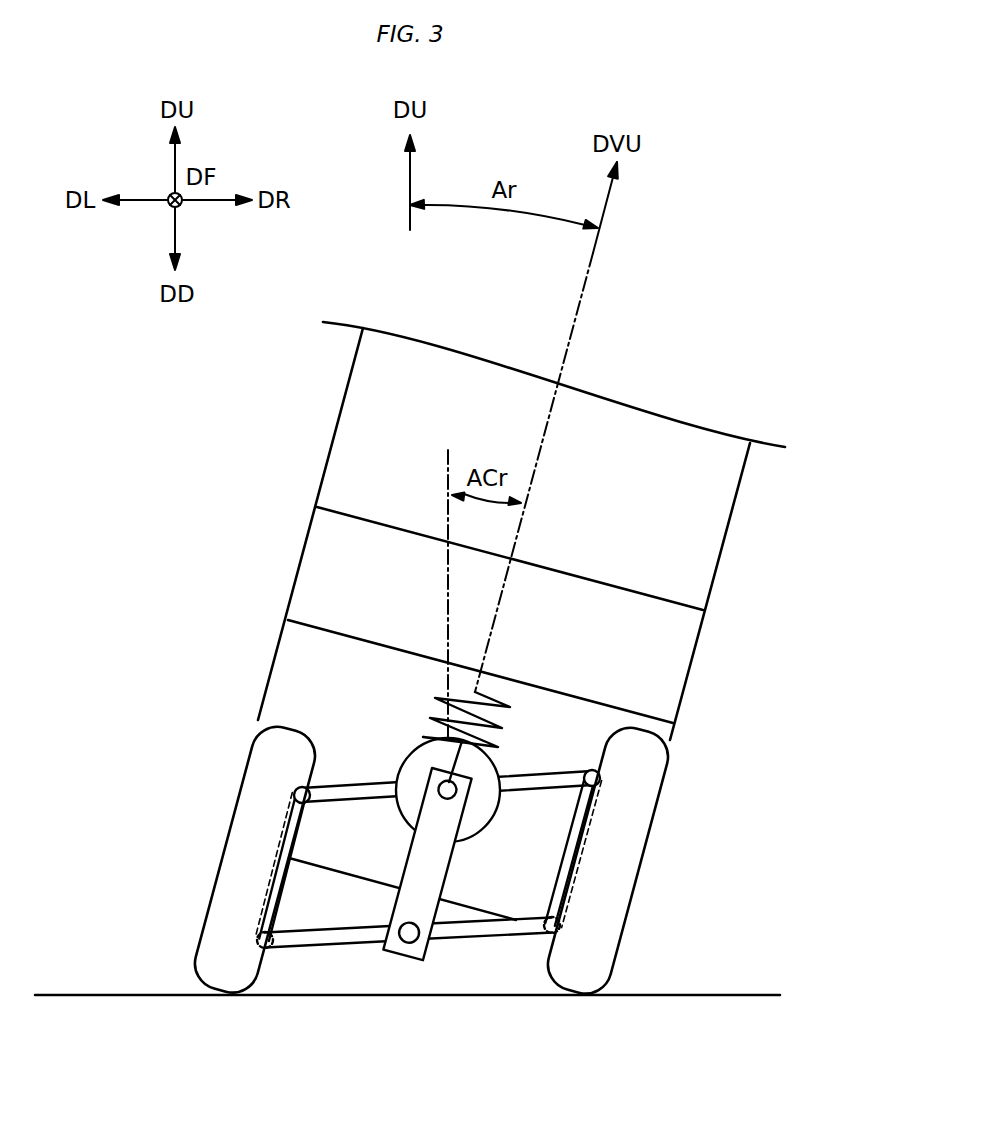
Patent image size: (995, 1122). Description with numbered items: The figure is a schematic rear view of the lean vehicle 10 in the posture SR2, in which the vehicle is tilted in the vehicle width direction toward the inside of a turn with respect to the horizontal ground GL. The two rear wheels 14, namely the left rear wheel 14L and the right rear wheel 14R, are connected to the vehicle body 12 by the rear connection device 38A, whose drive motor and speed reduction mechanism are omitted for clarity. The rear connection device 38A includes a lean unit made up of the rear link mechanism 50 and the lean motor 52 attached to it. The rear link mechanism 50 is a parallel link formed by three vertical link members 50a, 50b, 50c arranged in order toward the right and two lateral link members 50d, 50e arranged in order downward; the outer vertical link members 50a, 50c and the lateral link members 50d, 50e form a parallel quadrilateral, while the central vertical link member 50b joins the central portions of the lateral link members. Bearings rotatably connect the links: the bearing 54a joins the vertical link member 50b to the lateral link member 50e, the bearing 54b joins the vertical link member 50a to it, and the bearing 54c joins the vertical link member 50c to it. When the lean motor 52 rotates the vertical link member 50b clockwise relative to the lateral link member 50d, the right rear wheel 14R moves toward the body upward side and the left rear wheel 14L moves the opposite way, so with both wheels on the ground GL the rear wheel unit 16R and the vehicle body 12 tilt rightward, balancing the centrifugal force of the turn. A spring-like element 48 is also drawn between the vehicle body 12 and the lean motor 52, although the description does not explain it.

The lean vehicle 10 is at (521, 531).
The vehicle body 12 is at (687, 641).
The wheels 14 is at (438, 860).
The left rear wheel 14L is at (240, 817).
The right rear wheel 14R is at (637, 814).
The rear wheel unit 16R is at (333, 700).
The rear connection device 38A is at (432, 880).
The spring 48 is at (437, 702).
The rear link mechanism 50 is at (533, 755).
The vertical link member 50a is at (287, 902).
The vertical link member 50b is at (414, 963).
The vertical link member 50c is at (567, 852).
The lateral link member 50d is at (352, 806).
The lateral link member 50e is at (338, 948).
The lean motor 52 is at (407, 758).
The bearing 54a is at (430, 937).
The bearing 54b is at (283, 950).
The bearing 54c is at (550, 928).
The ground GL is at (685, 993).
The posture SR2 is at (745, 133).